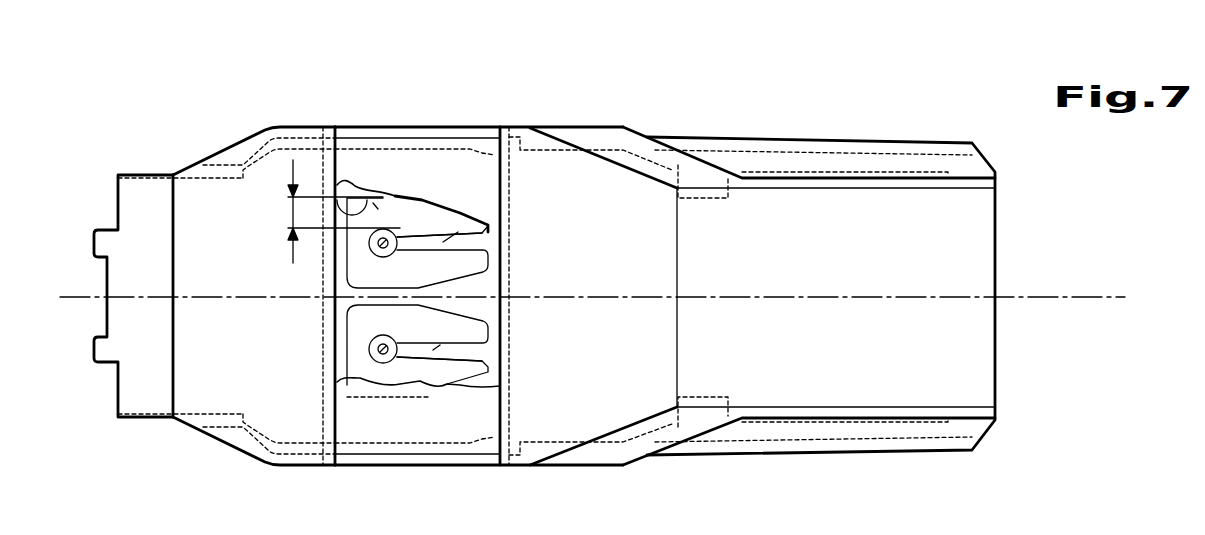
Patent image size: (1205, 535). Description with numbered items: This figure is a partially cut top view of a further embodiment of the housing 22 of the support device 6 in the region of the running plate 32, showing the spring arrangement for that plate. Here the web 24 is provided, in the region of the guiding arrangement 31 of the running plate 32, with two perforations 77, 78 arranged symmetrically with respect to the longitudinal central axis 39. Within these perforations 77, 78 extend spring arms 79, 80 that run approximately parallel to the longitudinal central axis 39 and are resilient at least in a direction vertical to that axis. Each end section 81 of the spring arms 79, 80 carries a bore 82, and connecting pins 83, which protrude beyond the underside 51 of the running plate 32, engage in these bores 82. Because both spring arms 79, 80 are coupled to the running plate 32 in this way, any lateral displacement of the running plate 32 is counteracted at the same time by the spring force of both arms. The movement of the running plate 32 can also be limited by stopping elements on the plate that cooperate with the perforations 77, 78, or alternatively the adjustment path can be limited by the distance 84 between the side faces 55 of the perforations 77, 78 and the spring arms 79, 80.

The support device 6 is at (170, 147).
The housing 22 is at (265, 170).
The web 24 is at (862, 222).
The guiding arrangement 31 is at (500, 110).
The running plate 32 is at (388, 170).
The longitudinal central axis 39 is at (770, 297).
The underside of the running plate 51 is at (405, 420).
The side faces of the perforations 55 is at (327, 207).
The perforation 77 is at (415, 215).
The perforation 78 is at (430, 376).
The spring arm 79 is at (445, 242).
The spring arm 80 is at (450, 345).
The end section 81 is at (352, 364).
The bore 82 is at (370, 247).
The connecting pin 83 is at (370, 340).
The distance 84 is at (290, 212).